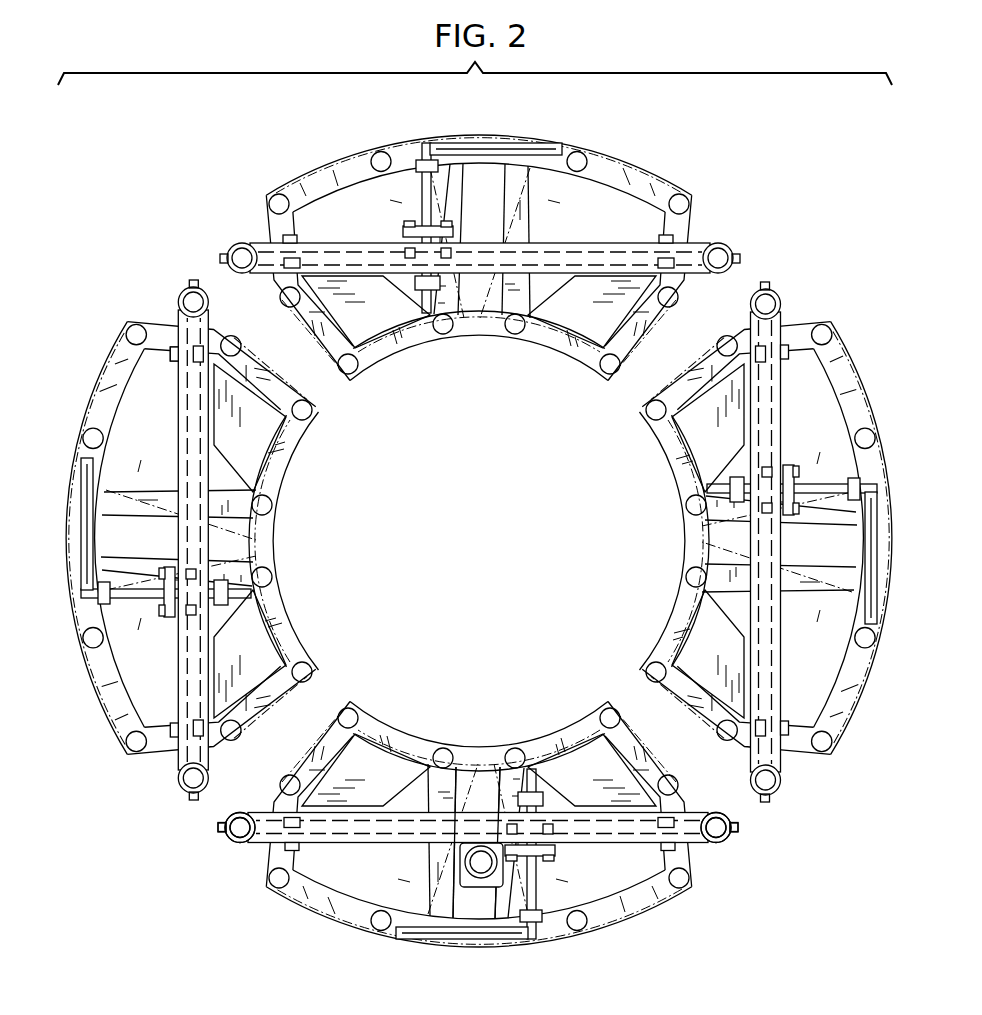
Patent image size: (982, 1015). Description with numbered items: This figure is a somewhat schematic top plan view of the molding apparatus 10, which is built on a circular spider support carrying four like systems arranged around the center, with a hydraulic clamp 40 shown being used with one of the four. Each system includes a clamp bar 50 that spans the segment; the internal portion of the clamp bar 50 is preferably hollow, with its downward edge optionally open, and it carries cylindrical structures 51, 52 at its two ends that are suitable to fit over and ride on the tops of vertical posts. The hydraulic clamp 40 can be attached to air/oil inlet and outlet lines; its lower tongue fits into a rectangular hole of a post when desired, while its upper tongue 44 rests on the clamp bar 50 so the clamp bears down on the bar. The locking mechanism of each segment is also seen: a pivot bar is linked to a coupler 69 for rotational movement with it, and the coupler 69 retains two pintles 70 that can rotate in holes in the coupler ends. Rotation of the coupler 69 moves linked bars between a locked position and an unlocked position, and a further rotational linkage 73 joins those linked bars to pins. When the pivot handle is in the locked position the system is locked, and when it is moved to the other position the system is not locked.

The molding apparatus 10 is at (479, 562).
The hydraulic clamp 40 is at (478, 873).
The upper tongue 44 is at (475, 777).
The clamp bar 50 is at (598, 257).
The cylindrical structure 51 is at (226, 838).
The cylindrical structure 52 is at (733, 832).
The coupler 69 is at (783, 503).
The pintles 70 is at (190, 580).
The rotational linkage 73 is at (170, 357).